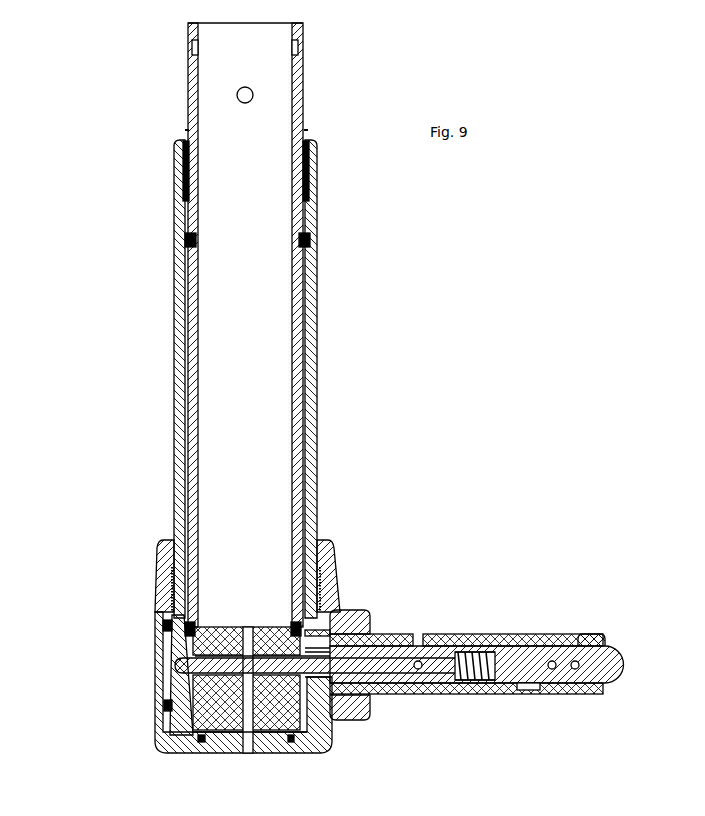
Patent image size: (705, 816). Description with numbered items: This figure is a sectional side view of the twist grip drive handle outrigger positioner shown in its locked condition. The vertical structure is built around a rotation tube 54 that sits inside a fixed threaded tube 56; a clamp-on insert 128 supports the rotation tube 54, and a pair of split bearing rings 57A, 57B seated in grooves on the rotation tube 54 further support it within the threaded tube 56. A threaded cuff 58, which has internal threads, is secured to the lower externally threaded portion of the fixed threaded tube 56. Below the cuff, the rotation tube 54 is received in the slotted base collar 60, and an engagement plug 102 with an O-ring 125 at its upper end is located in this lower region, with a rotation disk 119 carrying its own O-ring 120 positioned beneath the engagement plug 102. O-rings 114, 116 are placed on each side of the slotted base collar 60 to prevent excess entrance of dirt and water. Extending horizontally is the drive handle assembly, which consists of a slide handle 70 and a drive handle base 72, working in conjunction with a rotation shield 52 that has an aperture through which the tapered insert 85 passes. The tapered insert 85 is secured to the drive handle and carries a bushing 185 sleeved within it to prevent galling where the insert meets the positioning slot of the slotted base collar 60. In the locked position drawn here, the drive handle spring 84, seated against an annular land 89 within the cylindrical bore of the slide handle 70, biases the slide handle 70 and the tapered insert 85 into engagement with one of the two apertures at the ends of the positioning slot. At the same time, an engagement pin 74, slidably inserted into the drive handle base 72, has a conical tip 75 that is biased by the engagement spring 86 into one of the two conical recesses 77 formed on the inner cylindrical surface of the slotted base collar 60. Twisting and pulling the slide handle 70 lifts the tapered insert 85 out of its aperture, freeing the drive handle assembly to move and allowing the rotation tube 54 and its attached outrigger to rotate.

The rotation tube 54 is at (305, 82).
The fixed threaded tube 56 is at (316, 360).
The clamp-on insert 128 is at (312, 180).
The split bearing ring 57A is at (308, 242).
The split bearing ring 57B is at (187, 627).
The threaded cuff 58 is at (333, 545).
The engagement plug 102 is at (340, 610).
The O-ring 125 is at (352, 612).
The tapered insert 85 is at (385, 633).
The bushing 185 is at (373, 640).
The annular land 89 is at (398, 643).
The drive handle spring 84 is at (415, 634).
The engagement spring 86 is at (485, 660).
The drive handle base 72 is at (625, 664).
The slide handle 70 is at (407, 697).
The rotation shield 52 is at (362, 722).
The engagement pin 74 is at (313, 752).
The conical tip 75 is at (177, 664).
The conical recess 77 is at (168, 657).
The O-ring 116 is at (157, 622).
The O-ring 114 is at (167, 705).
The slotted base collar 60 is at (148, 731).
The O-ring 120 is at (202, 742).
The rotation disk 119 is at (205, 758).